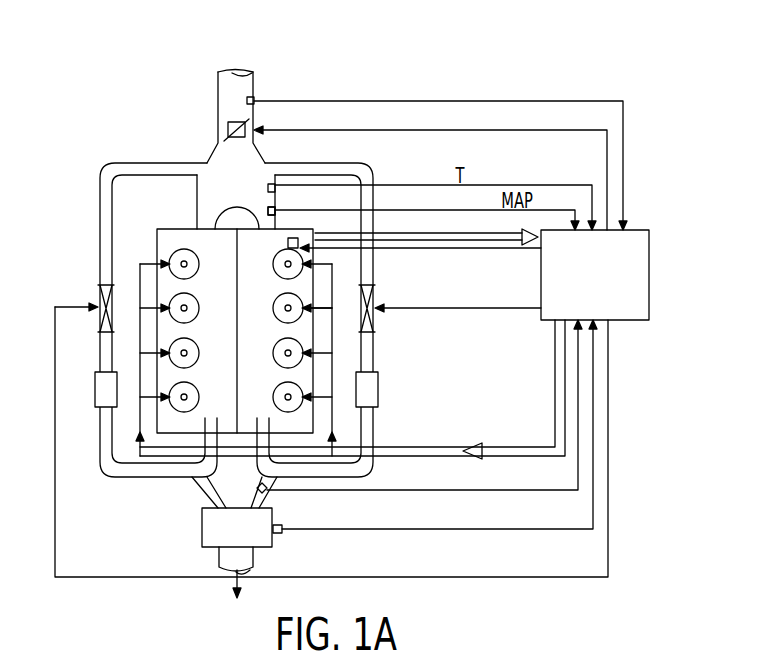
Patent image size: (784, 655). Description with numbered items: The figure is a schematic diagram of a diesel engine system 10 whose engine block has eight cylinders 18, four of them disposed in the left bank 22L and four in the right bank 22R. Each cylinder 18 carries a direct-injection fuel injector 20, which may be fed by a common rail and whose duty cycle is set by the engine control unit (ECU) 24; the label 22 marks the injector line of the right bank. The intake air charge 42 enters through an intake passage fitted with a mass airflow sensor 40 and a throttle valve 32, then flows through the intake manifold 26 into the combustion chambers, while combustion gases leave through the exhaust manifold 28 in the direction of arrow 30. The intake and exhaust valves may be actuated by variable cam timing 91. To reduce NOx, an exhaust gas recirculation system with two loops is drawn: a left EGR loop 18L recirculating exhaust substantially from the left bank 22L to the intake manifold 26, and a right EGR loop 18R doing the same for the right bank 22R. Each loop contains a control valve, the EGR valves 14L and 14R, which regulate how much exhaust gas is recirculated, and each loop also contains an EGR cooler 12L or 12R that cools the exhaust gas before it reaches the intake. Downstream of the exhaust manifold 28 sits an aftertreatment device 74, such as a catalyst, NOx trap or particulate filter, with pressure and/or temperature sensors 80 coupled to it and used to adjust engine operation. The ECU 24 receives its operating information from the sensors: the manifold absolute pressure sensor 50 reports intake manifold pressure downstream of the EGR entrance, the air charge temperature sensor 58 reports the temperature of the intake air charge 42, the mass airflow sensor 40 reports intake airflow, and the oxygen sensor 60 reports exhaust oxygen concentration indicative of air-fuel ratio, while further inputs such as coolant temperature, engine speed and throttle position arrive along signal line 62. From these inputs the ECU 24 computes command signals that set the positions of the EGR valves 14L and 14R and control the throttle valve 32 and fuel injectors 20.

The diesel engine system 10 is at (657, 128).
The intake air charge 42 is at (231, 70).
The mass airflow (MAF) sensor 40 is at (255, 98).
The throttle valve 32 is at (227, 127).
The intake manifold 26 is at (203, 197).
The air charge temperature sensor 58 is at (272, 176).
The manifold absolute pressure (MAP) sensor 50 is at (278, 208).
The variable cam timing (VCT) 91 is at (296, 240).
The signal line 62 is at (477, 233).
The left EGR loop 18L is at (100, 217).
The right EGR loop 18R is at (373, 230).
The left EGR valve 14L is at (98, 297).
The right EGR valve 14R is at (380, 295).
The left EGR cooler 12L is at (95, 390).
The right EGR cooler 12R is at (378, 394).
The direct-injection fuel injector 20 is at (195, 320).
The left bank 22L is at (162, 238).
The right bank 22R is at (336, 278).
The fuel injector line 22 is at (305, 301).
The cylinders 18 is at (172, 258).
The engine control unit (ECU) 24 is at (650, 282).
The exhaust manifold 28 is at (228, 485).
The oxygen sensor 60 is at (268, 491).
The aftertreatment device 74 is at (228, 539).
The pressure and/or temperature sensors 80 is at (276, 535).
The arrow 30 is at (237, 597).